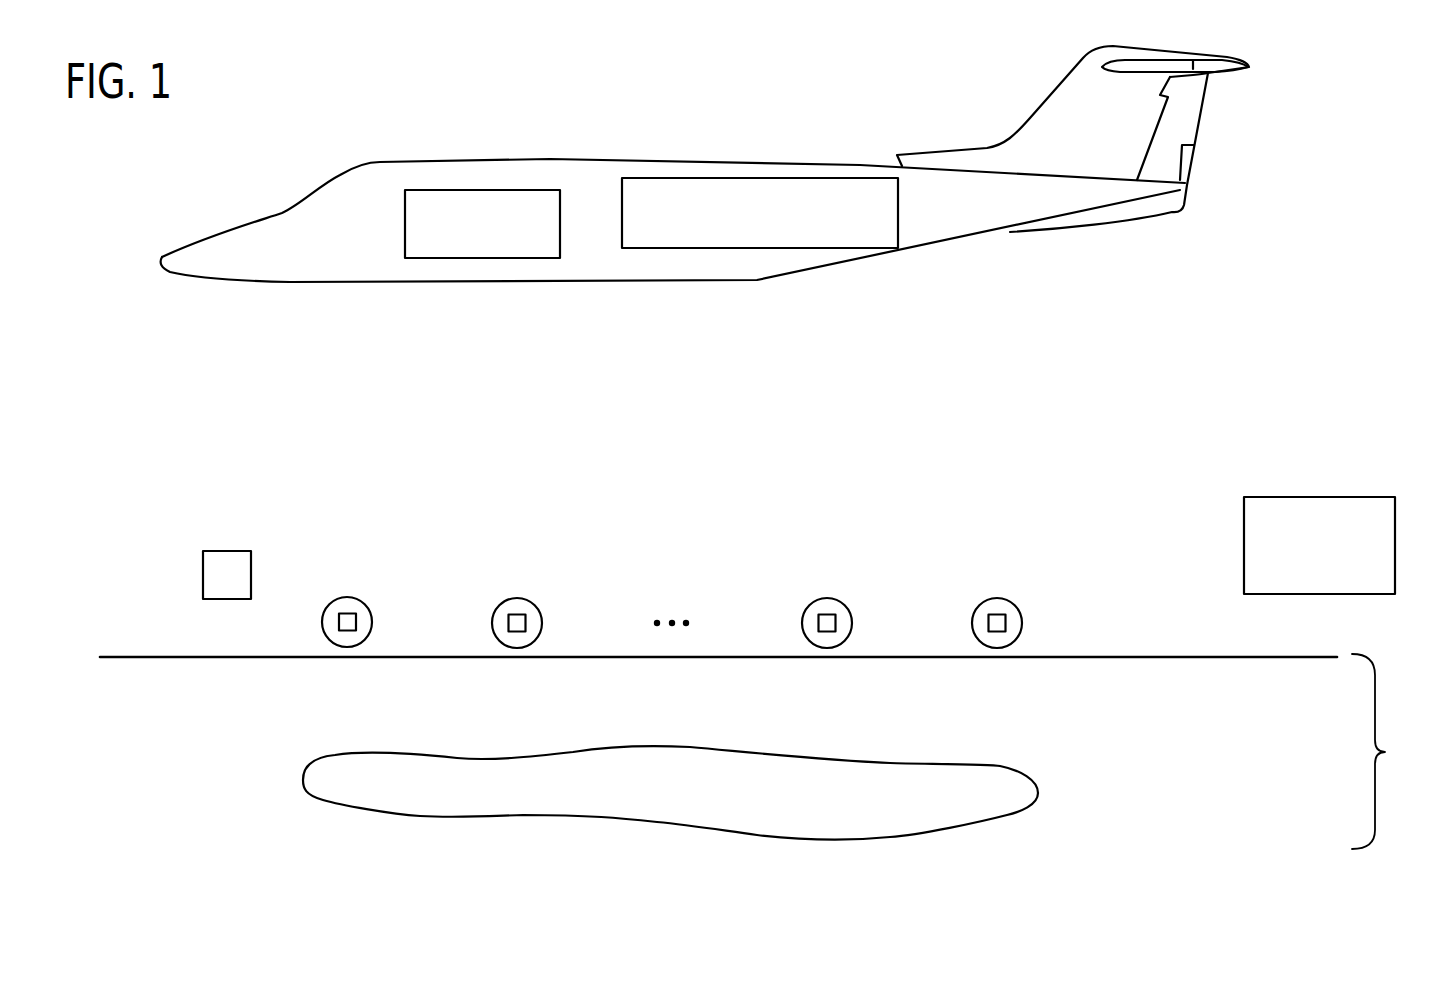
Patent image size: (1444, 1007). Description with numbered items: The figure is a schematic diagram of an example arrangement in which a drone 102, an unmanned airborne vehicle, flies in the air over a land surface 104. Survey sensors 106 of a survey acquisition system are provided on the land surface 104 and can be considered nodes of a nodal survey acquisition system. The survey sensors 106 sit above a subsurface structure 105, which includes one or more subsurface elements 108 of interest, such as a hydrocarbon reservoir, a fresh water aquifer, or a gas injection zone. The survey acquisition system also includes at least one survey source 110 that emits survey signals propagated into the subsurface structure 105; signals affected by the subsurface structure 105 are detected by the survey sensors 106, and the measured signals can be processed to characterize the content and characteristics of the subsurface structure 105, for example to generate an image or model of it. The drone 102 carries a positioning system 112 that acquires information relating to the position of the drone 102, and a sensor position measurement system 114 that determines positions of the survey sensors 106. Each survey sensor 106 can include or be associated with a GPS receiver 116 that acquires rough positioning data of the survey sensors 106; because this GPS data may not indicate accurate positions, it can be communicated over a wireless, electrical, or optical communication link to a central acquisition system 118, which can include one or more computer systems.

The drone 102 is at (860, 165).
The land surface 104 is at (1152, 652).
The subsurface structure 105 is at (1386, 752).
The survey sensors 106 is at (366, 604).
The subsurface elements of interest 108 is at (575, 758).
The survey source 110 is at (203, 573).
The positioning system 112 is at (480, 190).
The sensor position measurement system 114 is at (758, 178).
The GPS receiver 116 is at (339, 623).
The central acquisition system 118 is at (1321, 496).